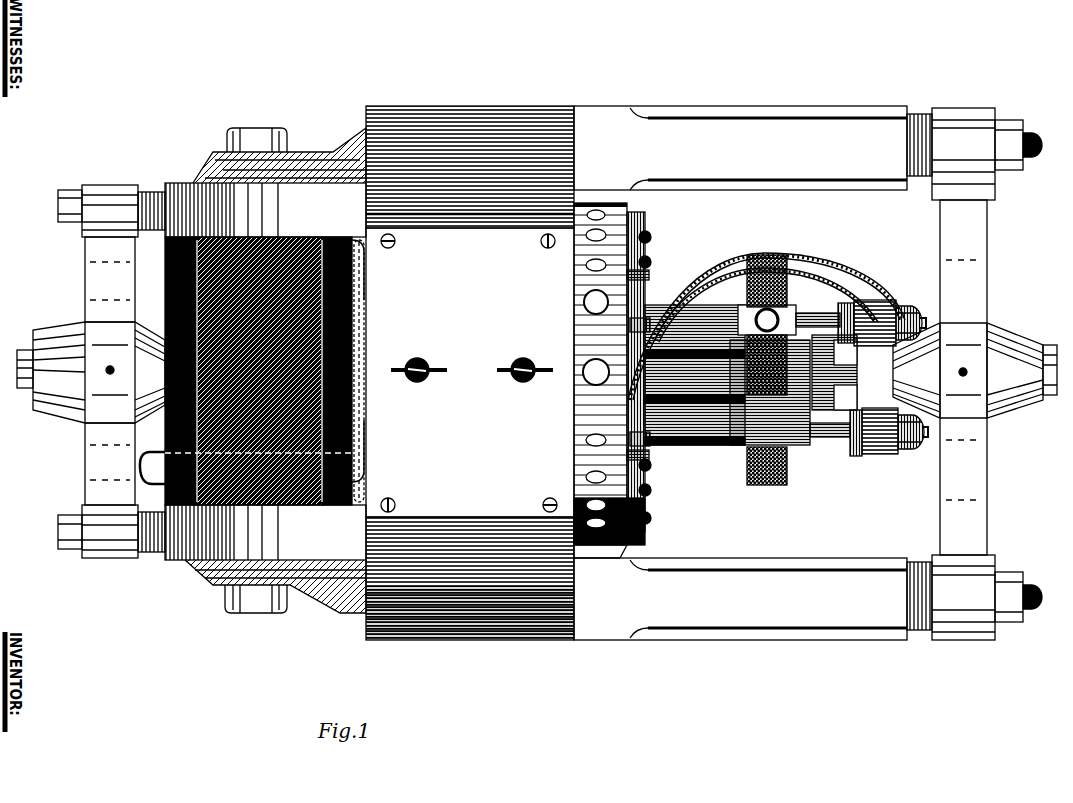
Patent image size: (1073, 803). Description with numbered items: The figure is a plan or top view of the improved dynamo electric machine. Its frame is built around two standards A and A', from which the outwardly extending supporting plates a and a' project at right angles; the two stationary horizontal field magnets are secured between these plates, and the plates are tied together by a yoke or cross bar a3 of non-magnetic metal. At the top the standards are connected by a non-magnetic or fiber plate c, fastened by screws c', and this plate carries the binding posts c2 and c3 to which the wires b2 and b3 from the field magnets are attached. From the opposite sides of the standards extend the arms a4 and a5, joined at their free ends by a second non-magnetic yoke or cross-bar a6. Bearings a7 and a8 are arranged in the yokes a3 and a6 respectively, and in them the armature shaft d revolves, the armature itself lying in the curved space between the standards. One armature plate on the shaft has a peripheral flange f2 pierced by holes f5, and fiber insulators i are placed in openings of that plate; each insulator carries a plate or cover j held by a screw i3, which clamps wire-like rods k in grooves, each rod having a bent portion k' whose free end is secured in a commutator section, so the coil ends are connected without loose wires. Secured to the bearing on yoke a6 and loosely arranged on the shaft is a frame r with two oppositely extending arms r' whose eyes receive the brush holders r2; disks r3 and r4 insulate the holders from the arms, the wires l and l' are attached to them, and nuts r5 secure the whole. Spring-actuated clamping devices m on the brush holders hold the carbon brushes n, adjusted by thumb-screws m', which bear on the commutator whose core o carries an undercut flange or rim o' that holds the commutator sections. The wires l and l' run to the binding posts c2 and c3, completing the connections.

The standard A is at (470, 154).
The standard A' is at (470, 598).
The supporting plate a is at (265, 182).
The supporting plate a' is at (265, 559).
The yoke or cross bar a3 is at (94, 282).
The arm a4 is at (740, 148).
The arm a5 is at (740, 599).
The yoke or cross-bar a6 is at (988, 296).
The bearing a7 is at (57, 342).
The bearing a8 is at (1003, 410).
The wire b2 is at (363, 438).
The wire b3 is at (362, 326).
The non-magnetic or fiber plate c is at (470, 372).
The screws c' is at (469, 374).
The binding post c2 is at (426, 378).
The binding post c3 is at (532, 378).
The armature shaft d is at (1052, 332).
The peripheral flange f2 is at (580, 203).
The holes f5 is at (606, 213).
The insulator i is at (650, 233).
The screw i3 is at (651, 258).
The plate or cover j is at (650, 258).
The wire-like rod k is at (645, 351).
The bent portion k' is at (658, 394).
The wire l is at (766, 317).
The wire l' is at (766, 305).
The spring-actuated clamping device m is at (778, 281).
The thumb-screw m' is at (767, 365).
The brush n is at (770, 478).
The body portion or core o is at (727, 375).
The undercut flange or rim o' is at (834, 373).
The frame r is at (838, 375).
The arm r' is at (903, 377).
The brush holder r2 is at (838, 455).
The insulating disk r3 is at (908, 304).
The insulating disk r4 is at (862, 302).
The nut r5 is at (922, 318).